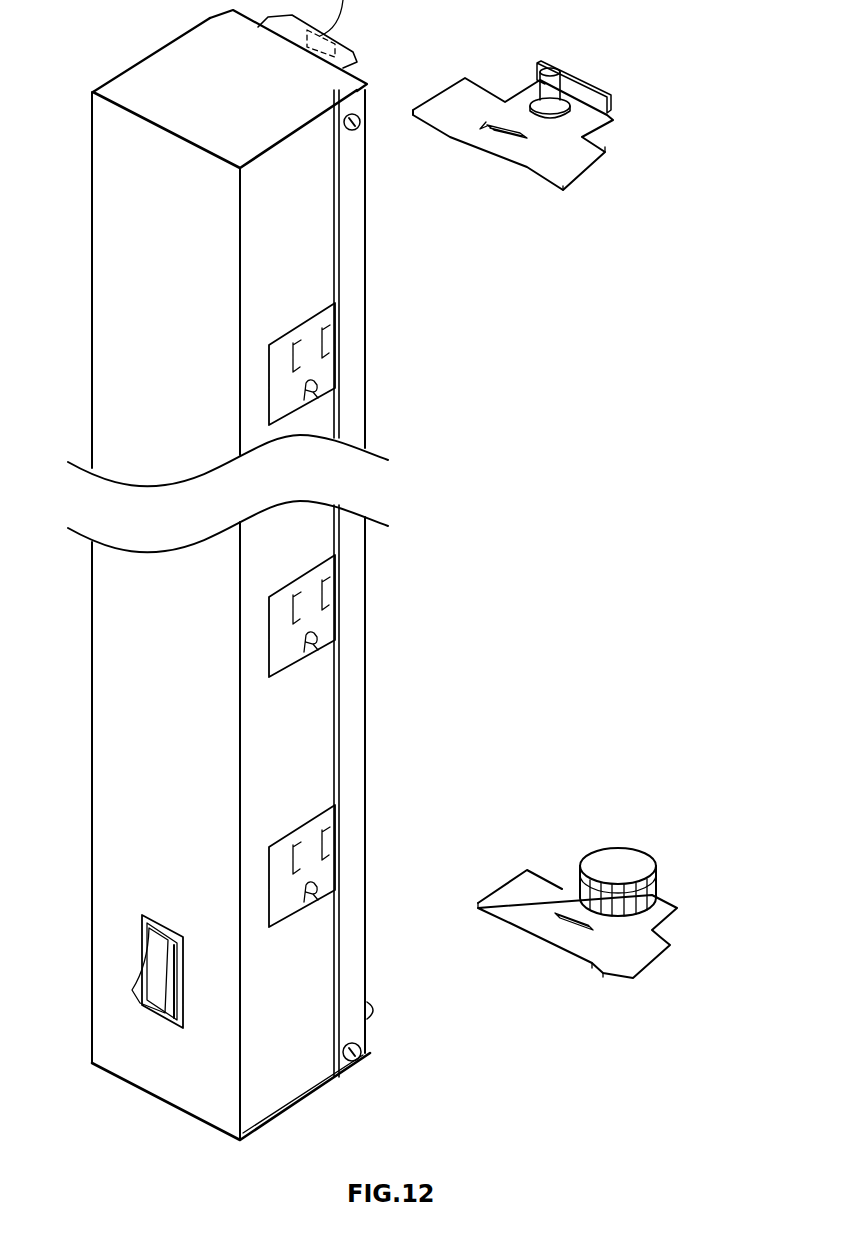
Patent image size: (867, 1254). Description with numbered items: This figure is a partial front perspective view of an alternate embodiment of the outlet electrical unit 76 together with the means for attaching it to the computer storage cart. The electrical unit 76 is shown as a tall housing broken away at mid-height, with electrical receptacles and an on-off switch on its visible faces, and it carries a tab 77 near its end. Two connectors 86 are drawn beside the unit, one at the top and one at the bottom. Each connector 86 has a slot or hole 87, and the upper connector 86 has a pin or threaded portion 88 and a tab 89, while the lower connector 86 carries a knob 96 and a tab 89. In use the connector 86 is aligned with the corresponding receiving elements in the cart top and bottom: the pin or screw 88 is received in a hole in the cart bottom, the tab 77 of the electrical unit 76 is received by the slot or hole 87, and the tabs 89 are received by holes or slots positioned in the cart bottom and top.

The electrical unit 76 is at (110, 277).
The tab 77 is at (374, 1013).
The connector 86 is at (525, 162).
The slot or hole 87 is at (468, 136).
The pin or threaded portion 88 is at (548, 93).
The tab 89 is at (590, 104).
The knob 96 is at (610, 866).